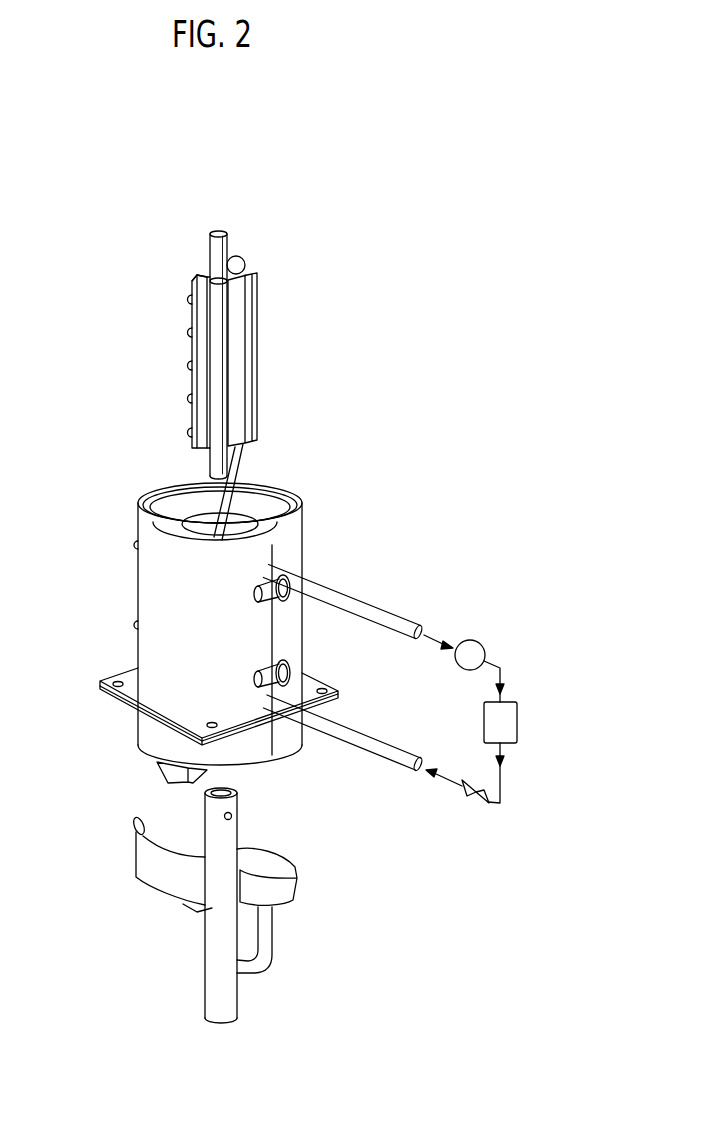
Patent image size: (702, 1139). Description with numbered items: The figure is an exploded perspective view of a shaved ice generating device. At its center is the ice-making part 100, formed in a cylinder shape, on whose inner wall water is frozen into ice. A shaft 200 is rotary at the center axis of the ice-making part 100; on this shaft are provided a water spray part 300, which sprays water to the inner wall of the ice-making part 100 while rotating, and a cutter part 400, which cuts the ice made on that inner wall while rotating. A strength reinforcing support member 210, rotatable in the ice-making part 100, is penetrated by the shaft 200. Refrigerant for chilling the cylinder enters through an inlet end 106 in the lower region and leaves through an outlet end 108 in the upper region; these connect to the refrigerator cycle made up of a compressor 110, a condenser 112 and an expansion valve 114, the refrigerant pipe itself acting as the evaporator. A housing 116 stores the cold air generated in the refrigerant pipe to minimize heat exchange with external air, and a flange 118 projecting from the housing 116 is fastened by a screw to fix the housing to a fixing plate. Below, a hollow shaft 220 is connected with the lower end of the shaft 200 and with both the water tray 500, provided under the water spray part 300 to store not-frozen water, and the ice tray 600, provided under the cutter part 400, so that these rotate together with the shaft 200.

The ice-making part 100 is at (134, 588).
The inlet end 106 is at (370, 752).
The outlet end 108 is at (370, 604).
The compressor 110 is at (470, 640).
The condenser 112 is at (508, 722).
The expansion valve 114 is at (467, 800).
The housing 116 is at (122, 680).
The flange 118 is at (163, 678).
The shaft 200 is at (208, 240).
The strength reinforcing support member 210 is at (194, 277).
The hollow shaft 220 is at (204, 804).
The water spray part 300 is at (257, 271).
The cutter part 400 is at (190, 349).
The water tray 500 is at (297, 884).
The ice tray 600 is at (136, 867).